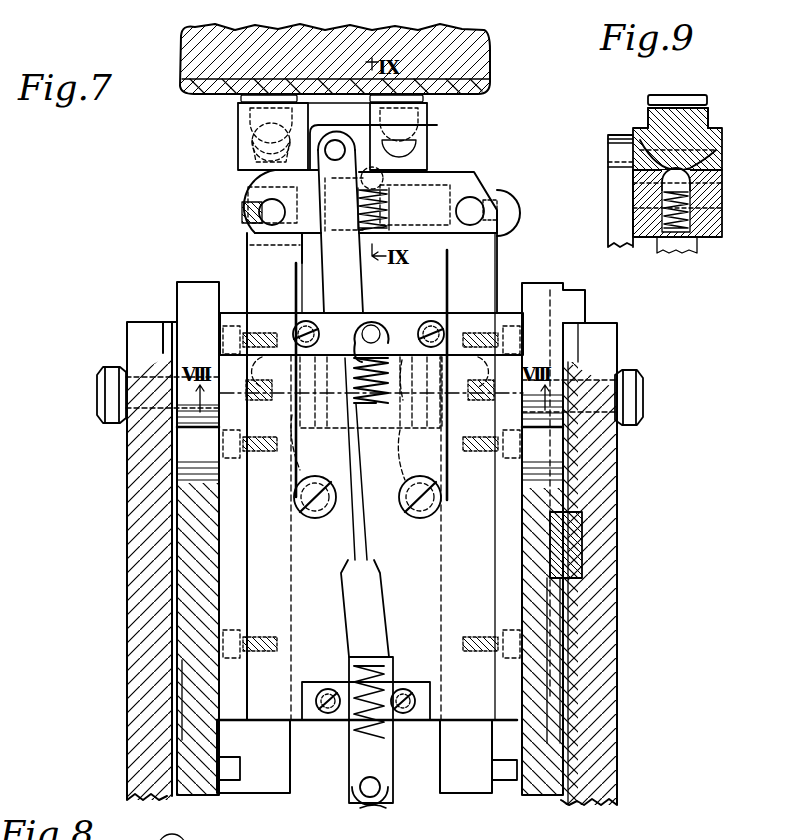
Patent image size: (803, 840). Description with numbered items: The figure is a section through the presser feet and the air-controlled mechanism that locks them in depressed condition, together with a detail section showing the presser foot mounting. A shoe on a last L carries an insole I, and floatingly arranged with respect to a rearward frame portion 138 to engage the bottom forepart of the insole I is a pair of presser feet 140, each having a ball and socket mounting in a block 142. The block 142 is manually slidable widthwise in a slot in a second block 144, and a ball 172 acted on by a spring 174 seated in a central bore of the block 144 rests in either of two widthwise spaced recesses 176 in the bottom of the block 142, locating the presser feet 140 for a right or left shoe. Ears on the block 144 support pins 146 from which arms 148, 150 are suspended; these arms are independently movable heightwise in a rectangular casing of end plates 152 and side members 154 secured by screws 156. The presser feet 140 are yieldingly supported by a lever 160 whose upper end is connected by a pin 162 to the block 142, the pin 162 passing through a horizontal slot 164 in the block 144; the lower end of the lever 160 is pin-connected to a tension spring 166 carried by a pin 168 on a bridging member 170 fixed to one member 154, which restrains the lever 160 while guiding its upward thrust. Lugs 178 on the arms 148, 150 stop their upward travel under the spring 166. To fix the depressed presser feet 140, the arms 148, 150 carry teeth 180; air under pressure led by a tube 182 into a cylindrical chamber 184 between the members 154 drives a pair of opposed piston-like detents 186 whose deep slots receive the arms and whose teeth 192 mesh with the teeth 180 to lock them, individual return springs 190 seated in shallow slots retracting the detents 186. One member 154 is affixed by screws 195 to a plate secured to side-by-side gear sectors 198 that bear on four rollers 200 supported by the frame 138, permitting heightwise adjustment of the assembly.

In FIG. 7, the last L is at (472, 50).
In FIG. 7, the insole I is at (207, 93).
In FIG. 7, the rearward frame portion 138 is at (128, 496).
In FIG. 7, the presser feet 140 is at (244, 102).
In FIG. 9, the presser feet 140 is at (686, 95).
In FIG. 7, the block 142 is at (243, 134).
In FIG. 9, the block 142 is at (648, 118).
In FIG. 7, the second block 144 is at (430, 144).
In FIG. 9, the second block 144 is at (712, 131).
In FIG. 7, the pins 146 is at (476, 206).
In FIG. 7, the arm 148 is at (284, 261).
In FIG. 7, the arm 150 is at (499, 242).
In FIG. 7, the end plates 152 is at (228, 722).
In FIG. 7, the side members 154 is at (408, 722).
In FIG. 7, the screws 156 is at (230, 326).
In FIG. 7, the lever 160 is at (362, 290).
In FIG. 9, the lever 160 is at (608, 220).
In FIG. 7, the pin 162 is at (316, 152).
In FIG. 9, the pin 162 is at (612, 178).
In FIG. 7, the horizontal slot 164 is at (346, 147).
In FIG. 7, the tension spring 166 is at (352, 749).
In FIG. 7, the pin 168 is at (373, 328).
In FIG. 7, the bridging member 170 is at (284, 313).
In FIG. 7, the ball 172 is at (380, 172).
In FIG. 9, the ball 172 is at (692, 178).
In FIG. 7, the spring 174 is at (388, 202).
In FIG. 9, the spring 174 is at (692, 212).
In FIG. 7, the recesses 176 is at (262, 170).
In FIG. 9, the recesses 176 is at (706, 152).
In FIG. 7, the lugs 178 is at (231, 782).
In FIG. 7, the teeth 180 is at (300, 292).
In FIG. 7, the tube 182 is at (386, 810).
In FIG. 7, the cylindrical chamber 184 is at (410, 420).
In FIG. 7, the detents 186 is at (292, 457).
In FIG. 7, the return springs 190 is at (256, 402).
In FIG. 7, the teeth 192 is at (450, 496).
In FIG. 7, the screws 195 is at (316, 521).
In FIG. 7, the gear sectors 198 is at (182, 286).
In FIG. 7, the rollers 200 is at (135, 397).